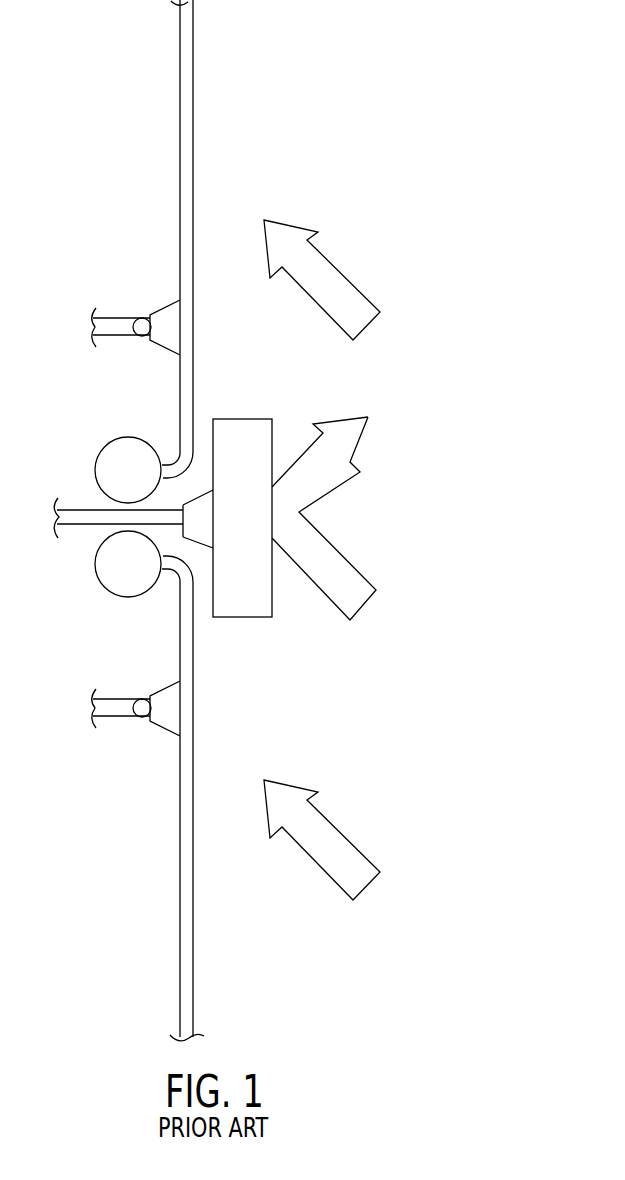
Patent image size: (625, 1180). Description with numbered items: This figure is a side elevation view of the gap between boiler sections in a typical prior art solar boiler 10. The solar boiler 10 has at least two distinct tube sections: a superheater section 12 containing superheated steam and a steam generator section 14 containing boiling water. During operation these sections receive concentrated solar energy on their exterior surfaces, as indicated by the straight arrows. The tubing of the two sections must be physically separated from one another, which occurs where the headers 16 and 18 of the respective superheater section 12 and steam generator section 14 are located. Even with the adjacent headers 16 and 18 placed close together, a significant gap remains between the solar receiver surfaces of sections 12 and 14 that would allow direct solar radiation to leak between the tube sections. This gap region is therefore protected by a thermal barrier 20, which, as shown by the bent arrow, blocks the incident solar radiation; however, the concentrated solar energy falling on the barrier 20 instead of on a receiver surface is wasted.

The solar boiler 10 is at (468, 610).
The superheater section 12 is at (193, 56).
The steam generator section 14 is at (193, 964).
The header 16 is at (103, 448).
The header 18 is at (98, 583).
The thermal barrier 20 is at (248, 419).